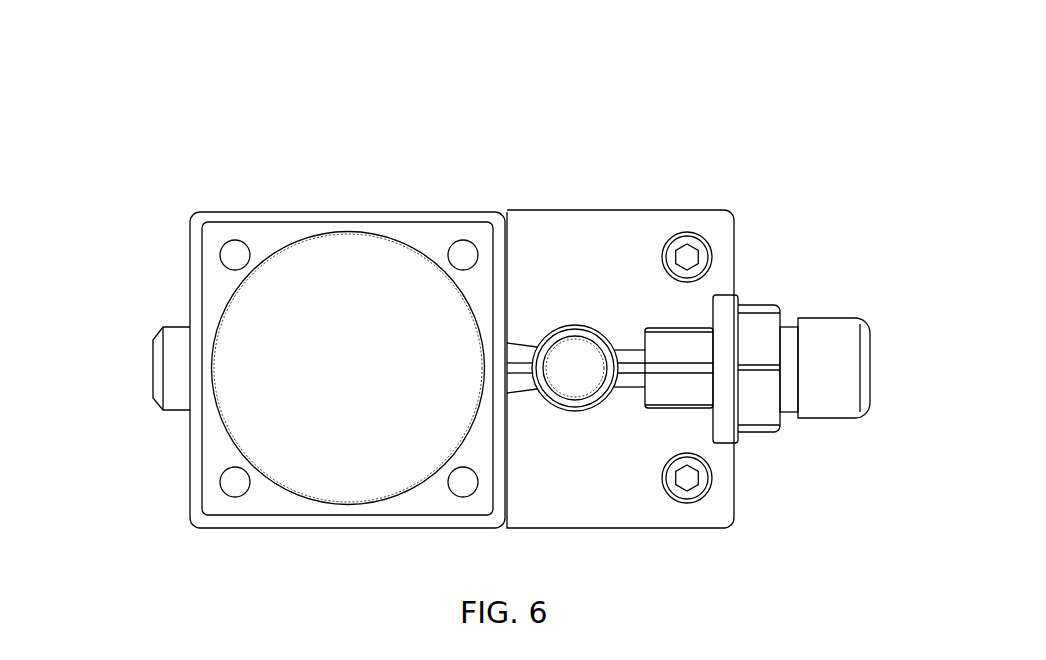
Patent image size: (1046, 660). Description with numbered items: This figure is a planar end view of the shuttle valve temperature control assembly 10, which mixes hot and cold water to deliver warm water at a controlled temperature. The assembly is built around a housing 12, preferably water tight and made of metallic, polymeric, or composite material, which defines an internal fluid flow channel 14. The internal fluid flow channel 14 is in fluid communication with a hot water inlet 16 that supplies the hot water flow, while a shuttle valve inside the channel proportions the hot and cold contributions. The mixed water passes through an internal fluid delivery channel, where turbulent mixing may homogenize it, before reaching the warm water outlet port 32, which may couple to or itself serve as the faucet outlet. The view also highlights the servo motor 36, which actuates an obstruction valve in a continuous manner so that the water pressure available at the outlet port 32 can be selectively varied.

The shuttle valve temperature control assembly 10 is at (502, 283).
The housing 12 is at (718, 272).
The internal fluid flow channel 14 is at (598, 315).
The hot water inlet 16 is at (867, 303).
The warm water outlet port 32 is at (178, 367).
The servo motor 36 is at (350, 268).